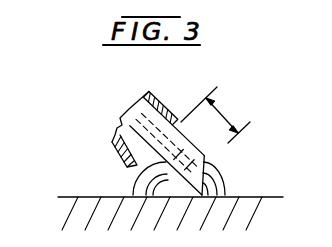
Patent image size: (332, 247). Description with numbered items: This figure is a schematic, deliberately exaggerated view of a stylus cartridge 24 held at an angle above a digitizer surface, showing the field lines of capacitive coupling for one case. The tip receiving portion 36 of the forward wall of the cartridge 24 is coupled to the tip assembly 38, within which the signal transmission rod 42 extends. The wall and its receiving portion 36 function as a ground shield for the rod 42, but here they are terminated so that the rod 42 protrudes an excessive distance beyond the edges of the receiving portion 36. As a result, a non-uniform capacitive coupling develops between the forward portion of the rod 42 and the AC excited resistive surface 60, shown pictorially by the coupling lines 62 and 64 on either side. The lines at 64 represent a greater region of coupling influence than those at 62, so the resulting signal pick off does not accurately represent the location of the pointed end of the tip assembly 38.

The cartridge 24 is at (193, 126).
The receiving portion 36 is at (180, 120).
The tip assembly 38 is at (205, 163).
The signal transmission rod 42 is at (173, 148).
The AC excited resistive surface 60 is at (70, 198).
The coupling lines 62 is at (224, 186).
The coupling lines 64 is at (130, 185).